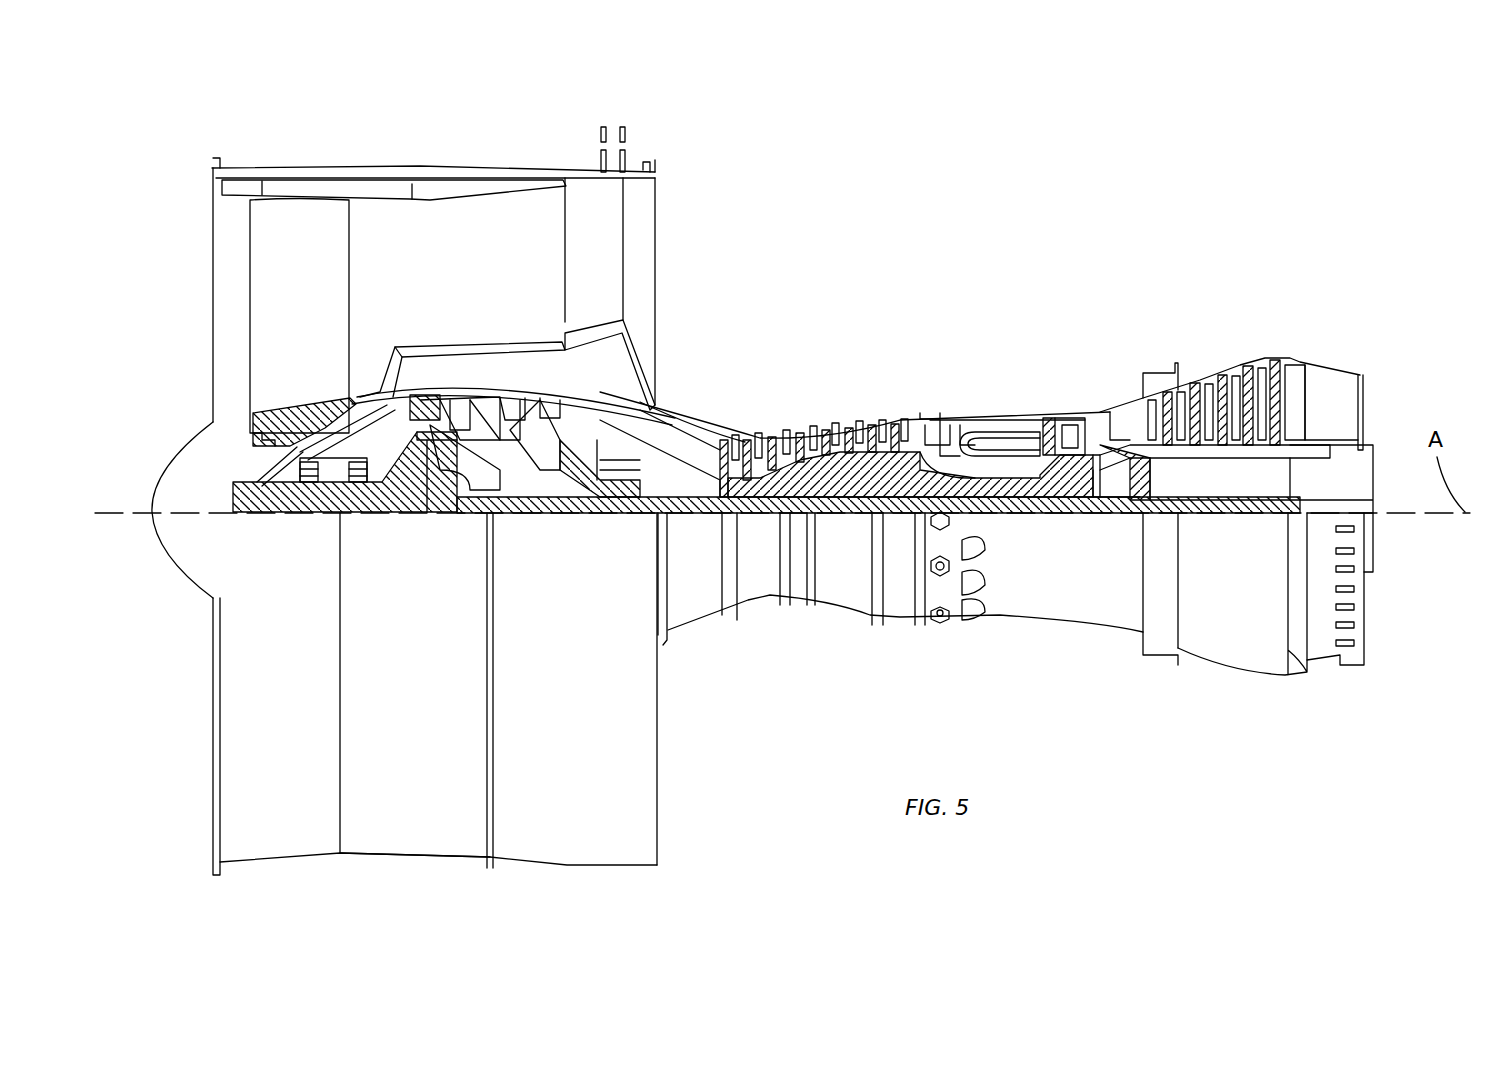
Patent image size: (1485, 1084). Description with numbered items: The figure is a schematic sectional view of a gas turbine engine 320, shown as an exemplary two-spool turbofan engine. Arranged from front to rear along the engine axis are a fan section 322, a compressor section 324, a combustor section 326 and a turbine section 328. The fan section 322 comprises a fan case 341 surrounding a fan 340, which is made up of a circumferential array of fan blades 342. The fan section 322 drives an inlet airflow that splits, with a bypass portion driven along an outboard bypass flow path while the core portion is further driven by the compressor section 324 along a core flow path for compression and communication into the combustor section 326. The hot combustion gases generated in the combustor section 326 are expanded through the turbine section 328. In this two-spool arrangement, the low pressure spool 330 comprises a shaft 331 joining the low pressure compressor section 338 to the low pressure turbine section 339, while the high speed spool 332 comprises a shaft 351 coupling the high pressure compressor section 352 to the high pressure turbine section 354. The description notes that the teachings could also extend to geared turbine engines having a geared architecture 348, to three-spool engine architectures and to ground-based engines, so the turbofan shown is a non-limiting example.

The gas turbine engine 320 is at (1028, 228).
The fan section 322 is at (332, 166).
The compressor section 324 is at (714, 420).
The combustor section 326 is at (988, 400).
The turbine section 328 is at (1167, 348).
The low pressure spool 330 is at (850, 518).
The shaft 331 is at (688, 520).
The high speed spool 332 is at (896, 470).
The low pressure compressor section 338 is at (575, 404).
The low pressure turbine section 339 is at (1224, 386).
The fan 340 is at (232, 386).
The fan case 341 is at (428, 836).
The fan blades 342 is at (316, 316).
The geared architecture 348 is at (438, 492).
The shaft 351 is at (1027, 516).
The high pressure compressor section 352 is at (822, 428).
The high pressure turbine section 354 is at (1070, 412).